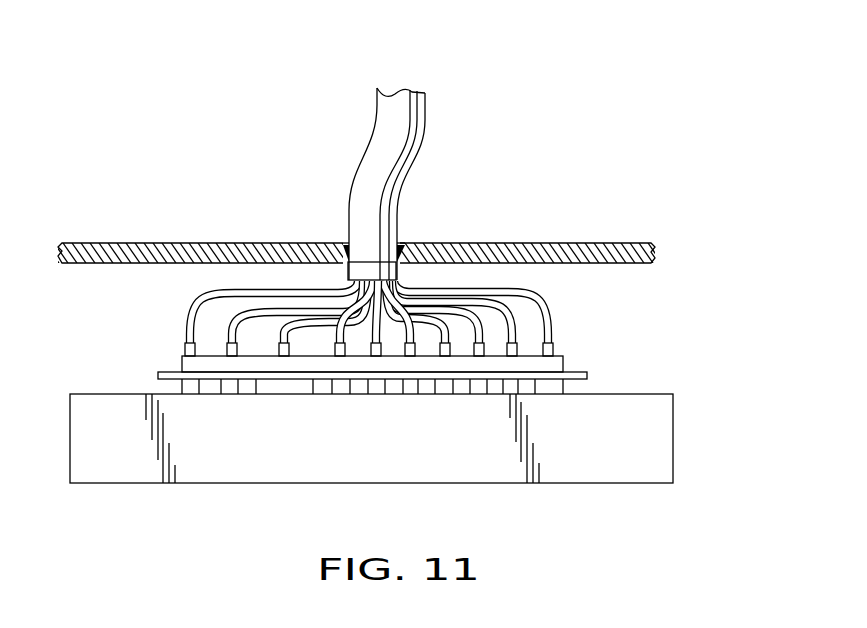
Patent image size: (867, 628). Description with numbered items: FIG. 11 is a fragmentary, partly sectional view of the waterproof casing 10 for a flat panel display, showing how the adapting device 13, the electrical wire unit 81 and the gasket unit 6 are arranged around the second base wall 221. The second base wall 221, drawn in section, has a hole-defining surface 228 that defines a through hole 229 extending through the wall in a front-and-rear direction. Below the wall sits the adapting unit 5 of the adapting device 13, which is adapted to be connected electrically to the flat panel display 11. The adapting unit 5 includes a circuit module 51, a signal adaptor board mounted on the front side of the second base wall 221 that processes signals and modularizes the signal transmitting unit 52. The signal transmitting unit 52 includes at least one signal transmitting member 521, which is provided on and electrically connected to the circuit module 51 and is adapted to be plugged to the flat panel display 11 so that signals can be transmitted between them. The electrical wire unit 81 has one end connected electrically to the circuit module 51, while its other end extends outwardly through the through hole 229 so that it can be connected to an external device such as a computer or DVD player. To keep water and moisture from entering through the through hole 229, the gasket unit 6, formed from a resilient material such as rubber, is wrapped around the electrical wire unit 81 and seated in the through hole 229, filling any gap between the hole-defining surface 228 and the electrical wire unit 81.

The waterproof casing 10 is at (142, 127).
The second base wall 221 is at (608, 253).
The hole-defining surface 228 is at (400, 243).
The through hole 229 is at (405, 258).
The gasket unit 6 is at (343, 246).
The adapting device 13 is at (50, 282).
The electrical wire unit 81 is at (356, 284).
The adapting unit 5 is at (140, 363).
The circuit module 51 is at (587, 373).
The signal transmitting unit 52 is at (550, 398).
The signal transmitting member 521 is at (372, 389).
The flat panel display 11 is at (652, 436).